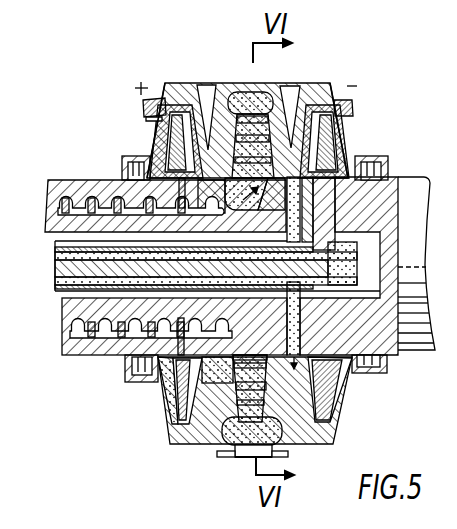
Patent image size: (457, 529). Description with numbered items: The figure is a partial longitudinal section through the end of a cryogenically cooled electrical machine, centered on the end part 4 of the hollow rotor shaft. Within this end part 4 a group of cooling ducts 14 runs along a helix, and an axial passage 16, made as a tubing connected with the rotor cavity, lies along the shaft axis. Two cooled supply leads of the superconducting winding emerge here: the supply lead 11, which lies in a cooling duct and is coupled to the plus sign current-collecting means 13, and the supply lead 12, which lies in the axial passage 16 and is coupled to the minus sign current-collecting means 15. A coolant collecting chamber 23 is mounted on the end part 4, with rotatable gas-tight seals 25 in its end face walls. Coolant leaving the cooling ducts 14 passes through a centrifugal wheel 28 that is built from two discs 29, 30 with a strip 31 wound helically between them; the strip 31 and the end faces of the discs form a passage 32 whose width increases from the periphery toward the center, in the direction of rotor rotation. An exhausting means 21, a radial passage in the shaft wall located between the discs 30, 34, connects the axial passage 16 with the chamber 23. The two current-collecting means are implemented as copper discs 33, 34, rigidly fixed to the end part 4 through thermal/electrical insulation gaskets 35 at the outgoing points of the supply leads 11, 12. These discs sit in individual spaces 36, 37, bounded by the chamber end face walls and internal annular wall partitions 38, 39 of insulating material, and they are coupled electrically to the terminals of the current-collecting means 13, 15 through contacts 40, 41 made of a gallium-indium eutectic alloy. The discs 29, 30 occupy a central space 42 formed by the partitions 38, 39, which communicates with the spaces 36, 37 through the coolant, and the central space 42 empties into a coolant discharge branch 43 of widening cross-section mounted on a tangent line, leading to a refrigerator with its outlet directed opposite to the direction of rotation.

The end part of the hollow shaft 4 is at (388, 207).
The supply lead 11 is at (70, 316).
The supply lead 12 is at (56, 276).
The plus sign current-collecting means 13 is at (152, 100).
The cooling ducts 14 is at (52, 222).
The minus sign current-collecting means 15 is at (341, 100).
The axial passage 16 is at (56, 249).
The exhausting means 21 is at (300, 323).
The coolant collecting chamber 23 is at (302, 127).
The rotatable gas-tight seals 25 is at (122, 170).
The centrifugal wheel 28 is at (256, 93).
The disc 29 is at (230, 150).
The disc 30 is at (284, 125).
The strip 31 is at (250, 356).
The passage 32 is at (235, 393).
The disc 33 is at (150, 118).
The disc 34 is at (342, 145).
The thermal/electrical insulation gaskets 35 is at (152, 380).
The space 36 is at (153, 150).
The space 37 is at (365, 158).
The internal annular wall partition 38 is at (188, 95).
The internal annular wall partition 39 is at (345, 113).
The contact 40 is at (166, 418).
The contact 41 is at (343, 418).
The central space 42 is at (252, 100).
The coolant discharge branch 43 is at (286, 455).